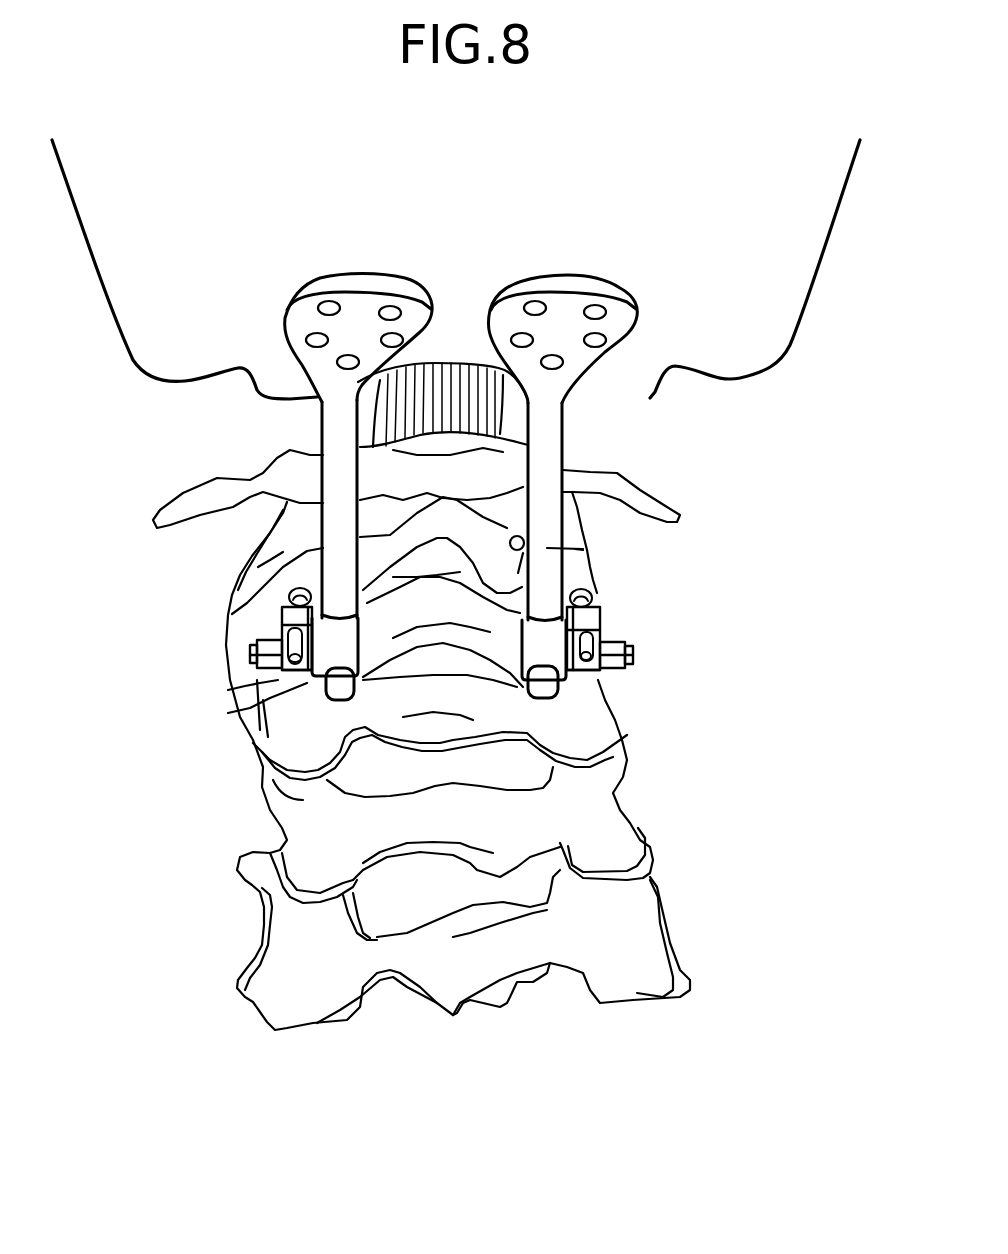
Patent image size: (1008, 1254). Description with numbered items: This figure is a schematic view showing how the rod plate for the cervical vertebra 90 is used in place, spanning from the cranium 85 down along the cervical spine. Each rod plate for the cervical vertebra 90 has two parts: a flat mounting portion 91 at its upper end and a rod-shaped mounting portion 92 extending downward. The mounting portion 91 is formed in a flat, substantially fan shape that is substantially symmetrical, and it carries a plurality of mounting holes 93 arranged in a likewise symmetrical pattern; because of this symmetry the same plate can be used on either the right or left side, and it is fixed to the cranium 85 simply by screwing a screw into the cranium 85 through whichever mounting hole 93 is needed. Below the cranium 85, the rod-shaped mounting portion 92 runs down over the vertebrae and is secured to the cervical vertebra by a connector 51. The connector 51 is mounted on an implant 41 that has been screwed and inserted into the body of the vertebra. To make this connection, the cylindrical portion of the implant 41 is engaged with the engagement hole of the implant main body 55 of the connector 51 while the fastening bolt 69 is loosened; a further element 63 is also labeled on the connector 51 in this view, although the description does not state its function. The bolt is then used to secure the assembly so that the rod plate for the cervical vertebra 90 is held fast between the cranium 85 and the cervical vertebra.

The cranium 85 is at (770, 298).
The mounting portion 91 is at (450, 377).
The mounting holes 93 is at (325, 312).
The rod plate for the cervical vertebra 90 is at (318, 529).
The mounting portion 92 is at (258, 567).
The implant main body 55 is at (283, 612).
The clamp slot 63 is at (265, 680).
The fastening bolt 69 is at (256, 656).
The implant 41 is at (252, 647).
The connector 51 is at (313, 688).